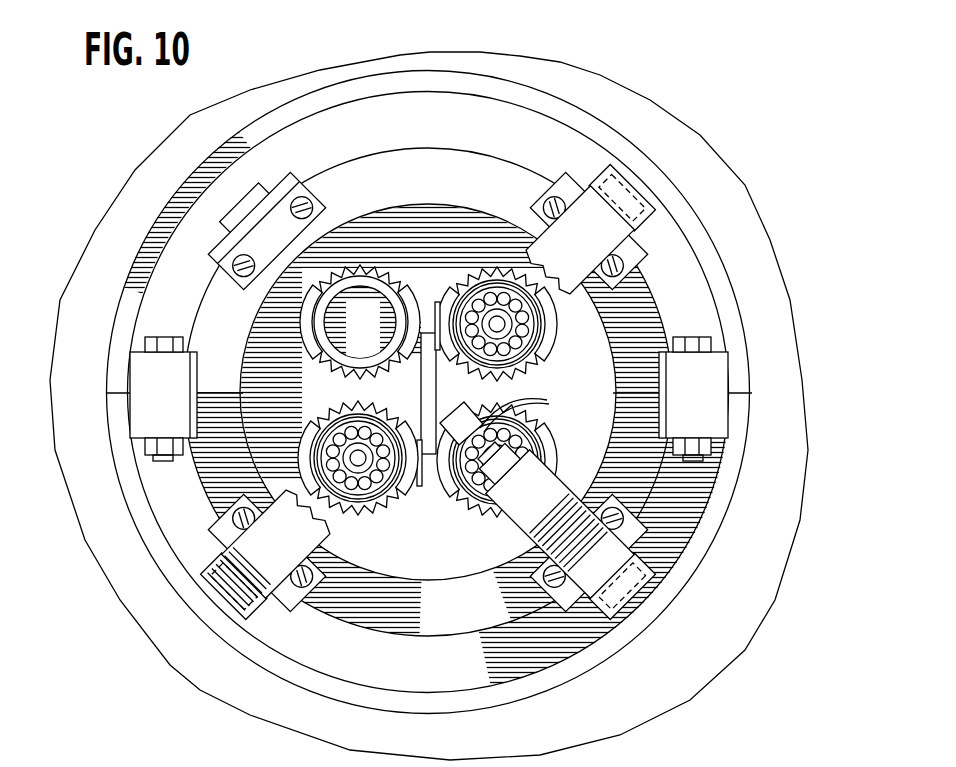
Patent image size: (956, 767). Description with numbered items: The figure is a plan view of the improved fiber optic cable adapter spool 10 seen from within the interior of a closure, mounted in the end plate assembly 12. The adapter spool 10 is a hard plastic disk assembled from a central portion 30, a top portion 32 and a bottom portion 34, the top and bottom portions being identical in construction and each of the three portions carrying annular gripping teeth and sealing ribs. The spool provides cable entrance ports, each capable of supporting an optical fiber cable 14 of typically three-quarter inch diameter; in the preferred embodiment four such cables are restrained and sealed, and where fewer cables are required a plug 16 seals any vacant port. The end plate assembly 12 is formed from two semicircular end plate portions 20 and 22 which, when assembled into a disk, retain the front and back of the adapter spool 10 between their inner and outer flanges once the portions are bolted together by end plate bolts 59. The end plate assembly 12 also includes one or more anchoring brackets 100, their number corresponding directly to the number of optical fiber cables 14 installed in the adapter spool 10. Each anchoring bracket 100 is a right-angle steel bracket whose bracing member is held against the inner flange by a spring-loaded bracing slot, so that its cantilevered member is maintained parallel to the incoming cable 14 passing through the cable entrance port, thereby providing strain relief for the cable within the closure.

The adapter spool 10 is at (492, 248).
The end plate assembly 12 is at (690, 198).
The optical fiber cable 14 is at (534, 325).
The plug 16 is at (393, 275).
The end plate portion 20 is at (265, 632).
The end plate portion 22 is at (207, 237).
The central portion 30 is at (578, 452).
The top portion 32 is at (380, 223).
The bottom portion 34 is at (438, 567).
The end plate bolts 59 is at (150, 317).
The anchoring bracket 100 is at (515, 515).